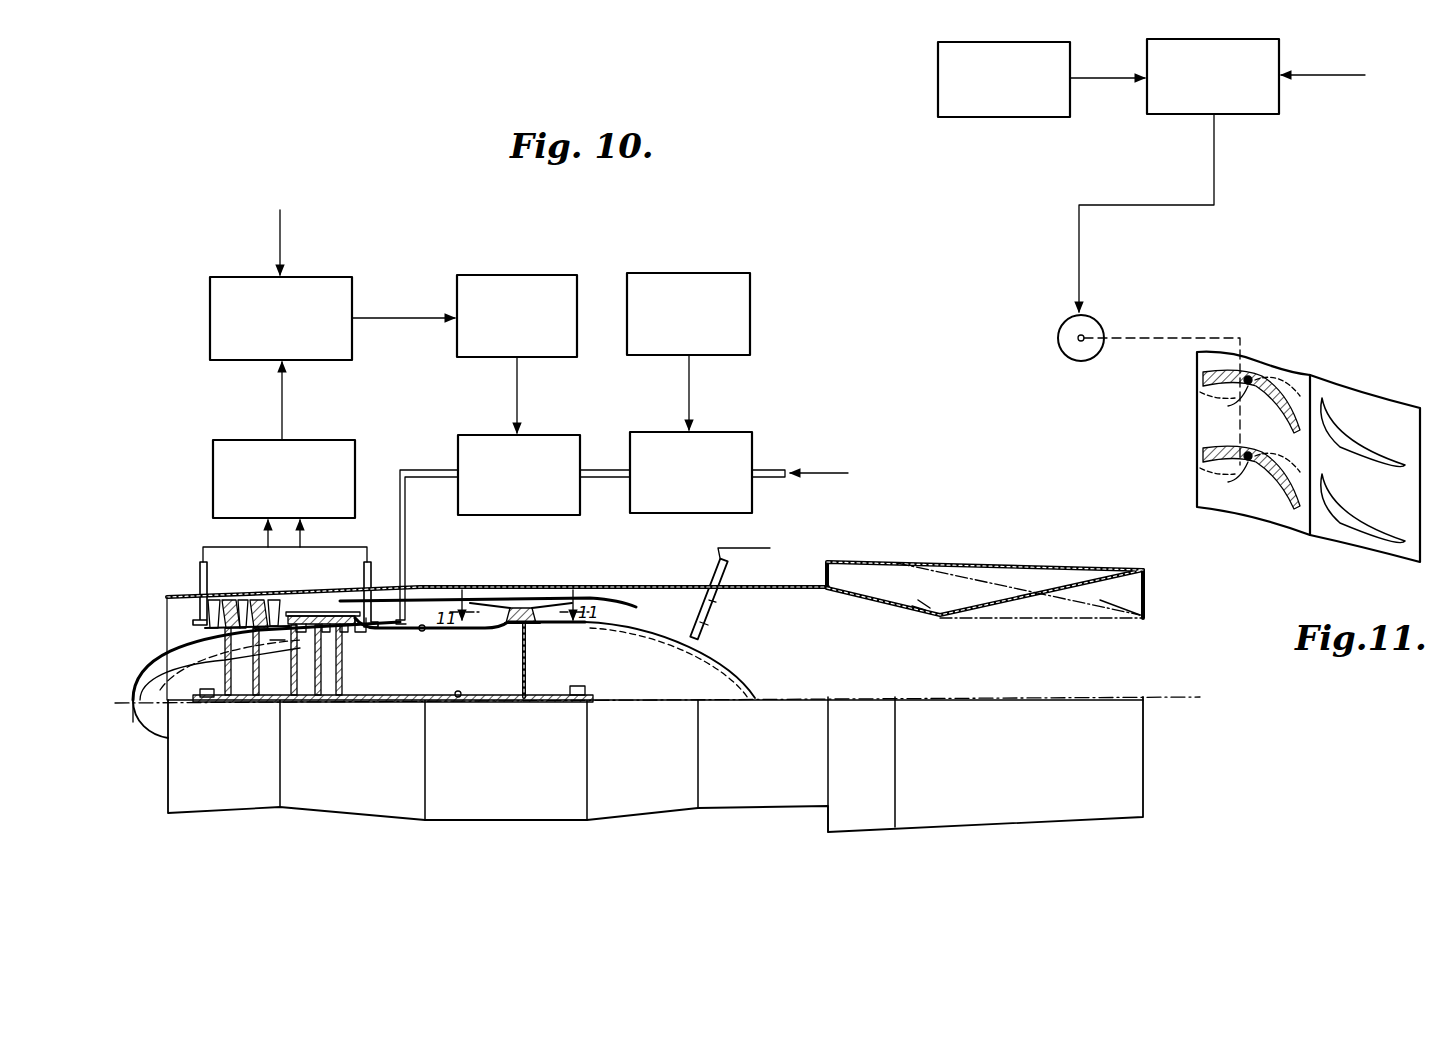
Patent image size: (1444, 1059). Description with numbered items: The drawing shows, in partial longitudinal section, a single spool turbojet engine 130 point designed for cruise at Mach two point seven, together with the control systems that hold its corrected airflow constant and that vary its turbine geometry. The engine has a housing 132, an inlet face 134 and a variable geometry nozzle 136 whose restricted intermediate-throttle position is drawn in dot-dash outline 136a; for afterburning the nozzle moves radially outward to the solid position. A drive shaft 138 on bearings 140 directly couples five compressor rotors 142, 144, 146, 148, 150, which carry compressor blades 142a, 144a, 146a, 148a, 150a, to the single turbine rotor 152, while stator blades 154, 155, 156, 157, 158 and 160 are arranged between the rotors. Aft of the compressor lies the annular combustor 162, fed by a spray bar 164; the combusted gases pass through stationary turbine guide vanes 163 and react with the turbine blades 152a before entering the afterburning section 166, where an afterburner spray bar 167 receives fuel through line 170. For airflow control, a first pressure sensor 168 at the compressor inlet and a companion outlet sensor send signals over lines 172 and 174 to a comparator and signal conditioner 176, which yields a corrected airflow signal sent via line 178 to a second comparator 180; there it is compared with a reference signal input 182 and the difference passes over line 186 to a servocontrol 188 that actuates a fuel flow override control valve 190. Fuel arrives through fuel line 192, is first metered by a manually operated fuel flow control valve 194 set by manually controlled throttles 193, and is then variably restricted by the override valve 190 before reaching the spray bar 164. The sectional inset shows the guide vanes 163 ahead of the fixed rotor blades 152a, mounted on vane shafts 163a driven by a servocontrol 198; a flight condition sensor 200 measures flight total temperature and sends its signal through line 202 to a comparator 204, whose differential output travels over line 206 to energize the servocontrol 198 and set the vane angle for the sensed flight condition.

In FIG. 10, the engine 130 is at (780, 566).
In FIG. 10, the housing 132 is at (606, 584).
In FIG. 10, the inlet face 134 is at (168, 597).
In FIG. 10, the variable geometry nozzle 136 is at (1019, 562).
In FIG. 10, the dot-dash outline of nozzle first position 136a is at (1105, 605).
In FIG. 10, the drive shaft 138 is at (458, 698).
In FIG. 10, the bearings 140 is at (203, 693).
In FIG. 10, the compressor rotor 142 is at (227, 660).
In FIG. 10, the compressor blades 142a is at (228, 636).
In FIG. 10, the compressor rotor 144 is at (258, 692).
In FIG. 10, the compressor blades 144a is at (234, 693).
In FIG. 10, the compressor rotor 146 is at (298, 695).
In FIG. 10, the compressor blades 146a is at (277, 647).
In FIG. 10, the compressor rotor 148 is at (321, 692).
In FIG. 10, the compressor blades 148a is at (323, 641).
In FIG. 10, the compressor rotor 150 is at (342, 690).
In FIG. 10, the compressor blades 150a is at (340, 615).
In FIG. 10, the turbine rotor 152 is at (524, 701).
In FIG. 11, the turbine rotor 152 is at (1402, 414).
In FIG. 10, the turbine rotor blades 152a is at (534, 626).
In FIG. 11, the turbine rotor blades 152a is at (1330, 415).
In FIG. 10, the stator blades 154 is at (243, 599).
In FIG. 10, the stator vane 155 is at (224, 605).
In FIG. 10, the stator blades 156 is at (275, 605).
In FIG. 10, the stator blades 157 is at (299, 614).
In FIG. 10, the stator blades 158 is at (320, 609).
In FIG. 10, the stator blades 160 is at (356, 629).
In FIG. 10, the annular combustor 162 is at (430, 630).
In FIG. 10, the turbine guide vanes 163 is at (514, 603).
In FIG. 11, the turbine guide vanes 163 is at (1207, 380).
In FIG. 11, the vane shafts 163a is at (1247, 389).
In FIG. 10, the spray bar 164 is at (412, 596).
In FIG. 10, the afterburning section 166 is at (740, 637).
In FIG. 10, the afterburner spray bar 167 is at (706, 565).
In FIG. 10, the first pressure sensor 168 is at (199, 566).
In FIG. 10, the fuel line 170 is at (370, 560).
In FIG. 10, the line 172 is at (219, 548).
In FIG. 10, the line 174 is at (336, 546).
In FIG. 10, the comparator and signal conditioner 176 is at (225, 440).
In FIG. 10, the line 178 is at (288, 406).
In FIG. 10, the second comparator 180 is at (210, 321).
In FIG. 10, the reference signal input 182 is at (278, 240).
In FIG. 10, the line 186 is at (394, 316).
In FIG. 10, the servocontrol 188 is at (511, 275).
In FIG. 10, the fuel flow override control valve 190 is at (541, 434).
In FIG. 10, the fuel line 192 is at (763, 470).
In FIG. 10, the manual throttle 193 is at (705, 273).
In FIG. 10, the manually operated fuel flow control valve 194 is at (727, 433).
In FIG. 11, the servocontrol 198 is at (1059, 338).
In FIG. 11, the flight condition sensor 200 is at (1043, 22).
In FIG. 11, the line 202 is at (1098, 76).
In FIG. 11, the comparator 204 is at (1240, 22).
In FIG. 11, the line 206 is at (1215, 163).